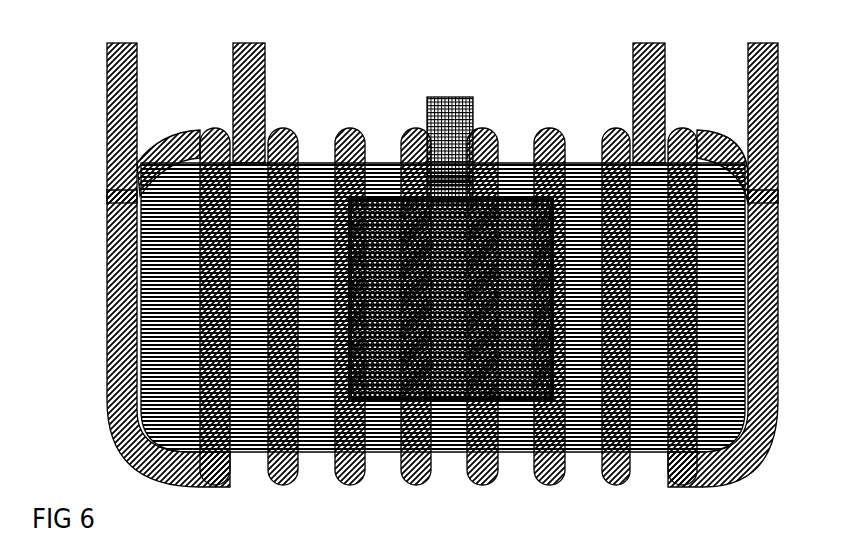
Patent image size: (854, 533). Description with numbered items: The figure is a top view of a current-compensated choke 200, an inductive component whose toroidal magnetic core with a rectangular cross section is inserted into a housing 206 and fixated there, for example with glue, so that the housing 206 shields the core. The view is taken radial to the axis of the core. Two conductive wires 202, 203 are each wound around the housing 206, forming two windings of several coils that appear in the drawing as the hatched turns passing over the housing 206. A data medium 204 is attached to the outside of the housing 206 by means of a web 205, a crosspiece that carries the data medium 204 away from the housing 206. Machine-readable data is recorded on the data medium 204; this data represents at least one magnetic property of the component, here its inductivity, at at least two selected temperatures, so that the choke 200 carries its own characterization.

The current-compensated choke 200 is at (400, 62).
The wire 202 is at (247, 66).
The wire 203 is at (767, 67).
The data medium 204 is at (492, 230).
The web 205 is at (447, 107).
The housing 206 is at (313, 177).